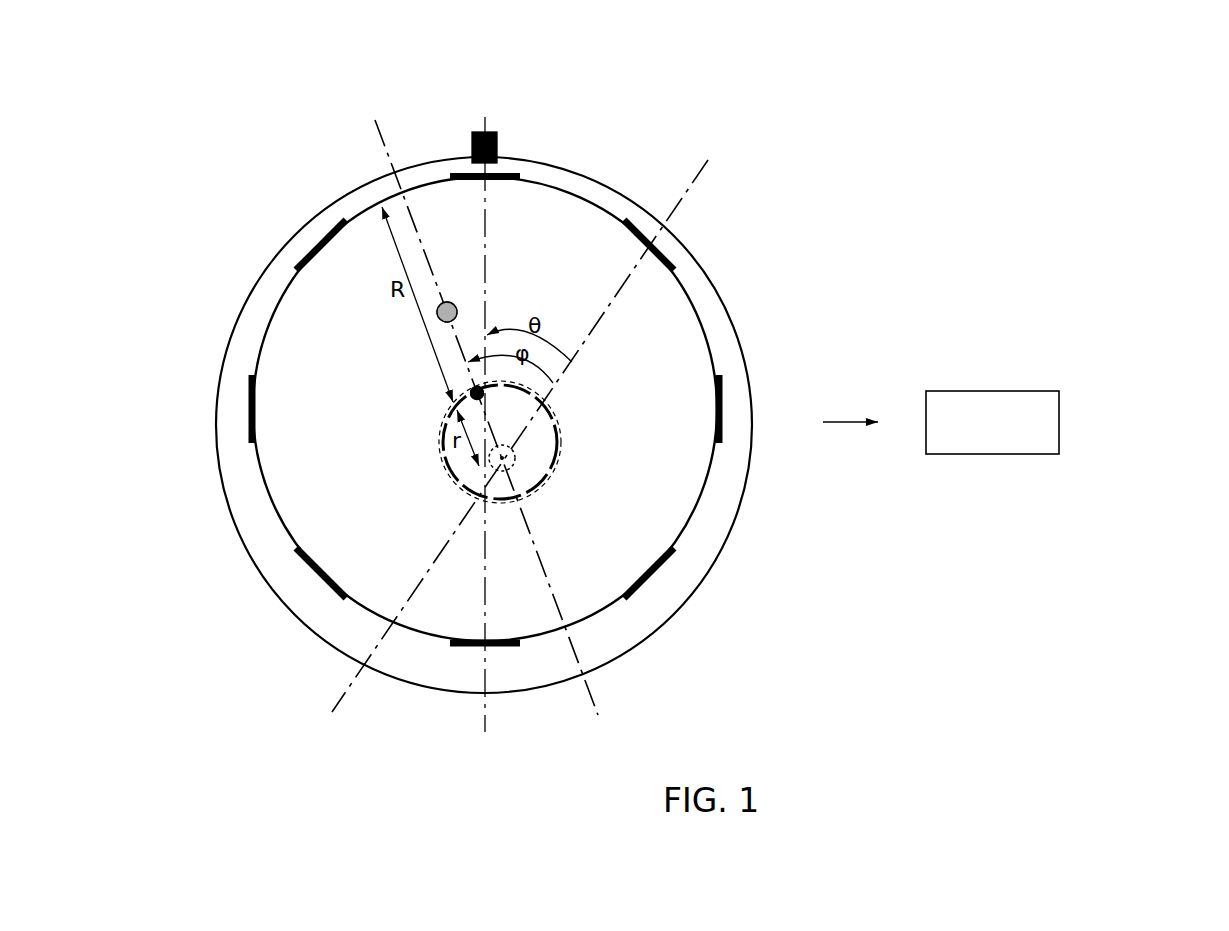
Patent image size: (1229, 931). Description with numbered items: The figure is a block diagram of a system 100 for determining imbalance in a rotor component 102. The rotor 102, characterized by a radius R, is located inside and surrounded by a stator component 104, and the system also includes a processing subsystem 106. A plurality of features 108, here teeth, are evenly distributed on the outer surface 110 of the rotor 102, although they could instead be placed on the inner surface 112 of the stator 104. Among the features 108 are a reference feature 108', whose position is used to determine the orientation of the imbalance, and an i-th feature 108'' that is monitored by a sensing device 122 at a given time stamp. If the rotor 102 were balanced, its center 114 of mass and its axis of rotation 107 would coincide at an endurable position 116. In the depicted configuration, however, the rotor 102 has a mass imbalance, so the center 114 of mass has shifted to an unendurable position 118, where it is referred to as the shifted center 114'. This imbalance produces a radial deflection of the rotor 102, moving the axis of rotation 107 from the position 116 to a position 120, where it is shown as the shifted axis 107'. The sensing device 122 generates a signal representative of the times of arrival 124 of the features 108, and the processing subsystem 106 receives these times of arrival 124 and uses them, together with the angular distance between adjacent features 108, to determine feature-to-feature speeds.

The system 100 is at (1102, 95).
The rotor component 102 is at (263, 355).
The stator component 104 is at (682, 238).
The processing subsystem 106 is at (993, 390).
The axis of rotation 107 is at (526, 442).
The shifted axis of rotation 107' is at (545, 394).
The features 108 is at (481, 431).
The reference feature 108' is at (645, 207).
The i-th feature 108'' is at (464, 132).
The outer surface 110 is at (709, 339).
The inner surface 112 is at (704, 296).
The center of mass 114 is at (506, 503).
The shifted center of mass 114' is at (462, 271).
The endurable position 116 is at (571, 473).
The unendurable position 118 is at (456, 283).
The shifted axis position 120 is at (565, 394).
The sensing device 122 is at (498, 152).
The times of arrival 124 is at (847, 420).